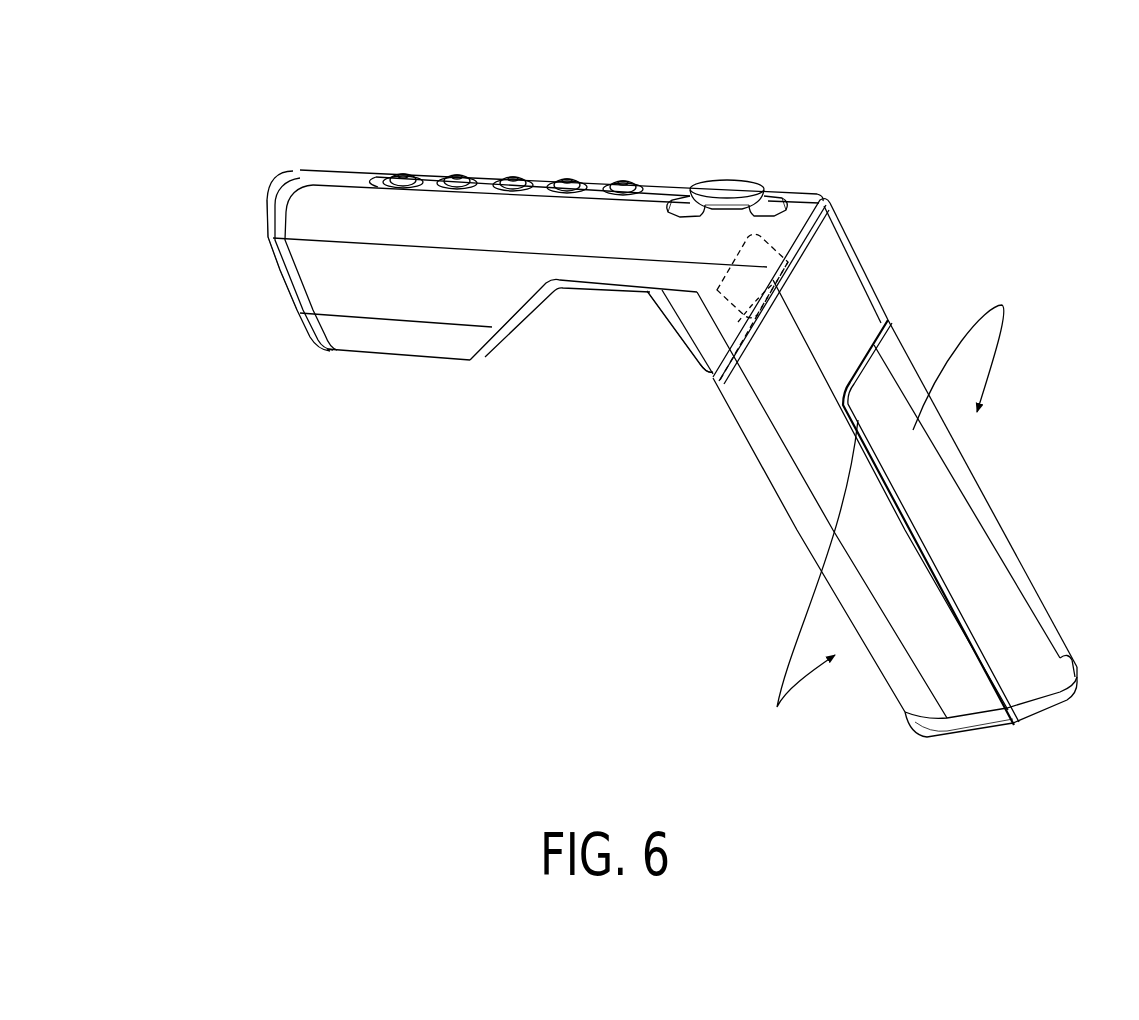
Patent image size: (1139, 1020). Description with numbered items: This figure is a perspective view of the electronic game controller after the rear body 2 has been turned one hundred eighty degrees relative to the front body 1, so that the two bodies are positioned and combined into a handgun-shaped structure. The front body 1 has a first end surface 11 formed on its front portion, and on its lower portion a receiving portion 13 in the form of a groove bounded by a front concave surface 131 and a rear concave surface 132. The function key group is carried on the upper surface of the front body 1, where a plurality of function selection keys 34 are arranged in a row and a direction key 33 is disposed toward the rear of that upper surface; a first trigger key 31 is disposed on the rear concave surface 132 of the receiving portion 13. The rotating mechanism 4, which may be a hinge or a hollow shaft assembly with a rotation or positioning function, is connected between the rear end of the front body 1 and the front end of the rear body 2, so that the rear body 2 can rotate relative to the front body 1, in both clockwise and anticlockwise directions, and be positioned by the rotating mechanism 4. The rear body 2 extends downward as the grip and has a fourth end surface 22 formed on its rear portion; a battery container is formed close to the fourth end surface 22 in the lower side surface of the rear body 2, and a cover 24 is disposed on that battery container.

The front body 1 is at (270, 183).
The first end surface 11 is at (283, 278).
The receiving portion 13 is at (587, 342).
The front concave surface 131 is at (522, 315).
The rear concave surface 132 is at (690, 352).
The first trigger key 31 is at (663, 318).
The direction key 33 is at (732, 187).
The function selection keys 34 is at (627, 172).
The rotating mechanism 4 is at (765, 235).
The rear body 2 is at (1008, 516).
The fourth end surface 22 is at (990, 733).
The cover 24 is at (1045, 612).